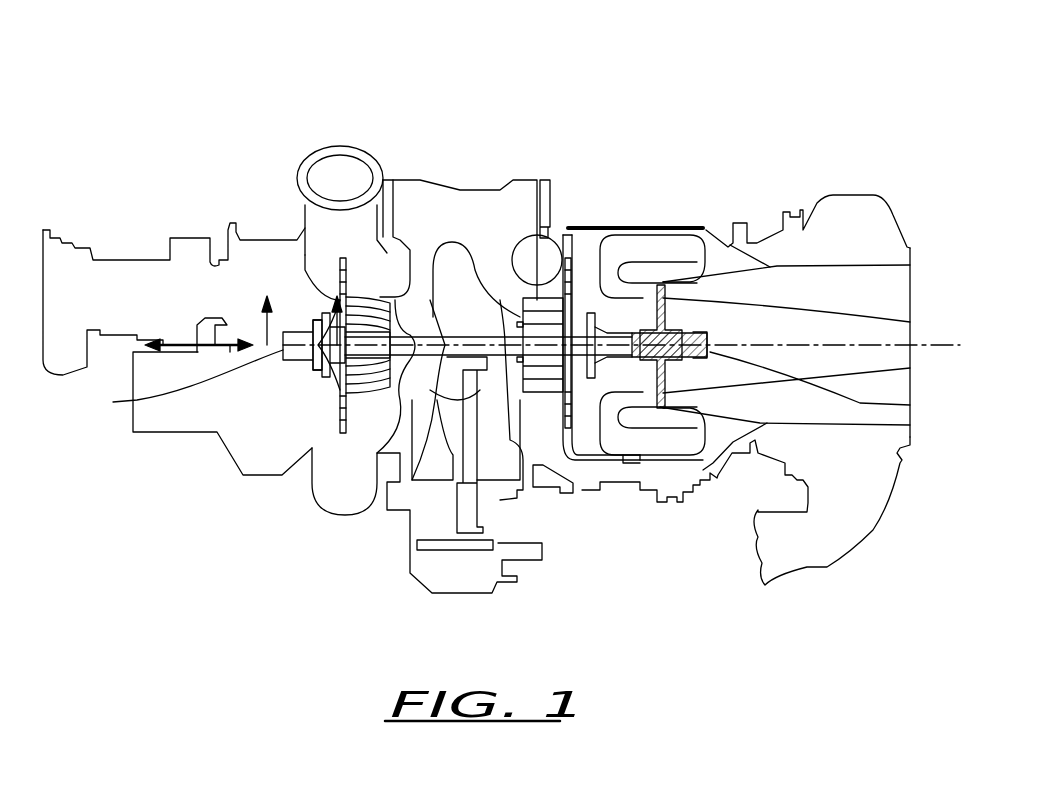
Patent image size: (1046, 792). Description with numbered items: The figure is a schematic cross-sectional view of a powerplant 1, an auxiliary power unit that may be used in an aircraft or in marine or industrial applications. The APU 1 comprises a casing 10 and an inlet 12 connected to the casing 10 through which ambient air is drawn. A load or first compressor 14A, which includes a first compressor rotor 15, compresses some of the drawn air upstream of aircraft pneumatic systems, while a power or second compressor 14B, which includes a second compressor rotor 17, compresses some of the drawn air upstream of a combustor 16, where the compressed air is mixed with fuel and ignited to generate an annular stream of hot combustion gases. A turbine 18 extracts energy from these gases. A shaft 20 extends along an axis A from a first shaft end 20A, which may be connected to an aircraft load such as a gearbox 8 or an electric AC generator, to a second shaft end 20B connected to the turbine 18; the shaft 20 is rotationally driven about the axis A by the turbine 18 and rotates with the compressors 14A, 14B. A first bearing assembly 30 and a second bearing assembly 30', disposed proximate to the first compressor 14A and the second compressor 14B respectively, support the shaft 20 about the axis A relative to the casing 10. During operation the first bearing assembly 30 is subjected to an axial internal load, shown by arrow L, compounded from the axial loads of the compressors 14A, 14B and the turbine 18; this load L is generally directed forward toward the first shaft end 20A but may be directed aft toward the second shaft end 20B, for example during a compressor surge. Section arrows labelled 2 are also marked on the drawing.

The powerplant 1 is at (122, 133).
The gearbox 8 is at (158, 286).
The casing 10 is at (305, 218).
The inlet 12 is at (457, 190).
The load compressor 14A is at (346, 250).
The power compressor 14B is at (572, 224).
The first compressor rotor 15 is at (374, 305).
The combustor 16 is at (708, 228).
The second compressor rotor 17 is at (537, 300).
The turbine 18 is at (684, 290).
The shaft 20 is at (448, 320).
The first shaft end 20A is at (137, 400).
The second shaft end 20B is at (910, 400).
The first bearing assembly 30 is at (289, 443).
The second bearing assembly 30' is at (586, 463).
The section line 2 is at (302, 302).
The internal load L is at (198, 344).
The axis A is at (946, 345).